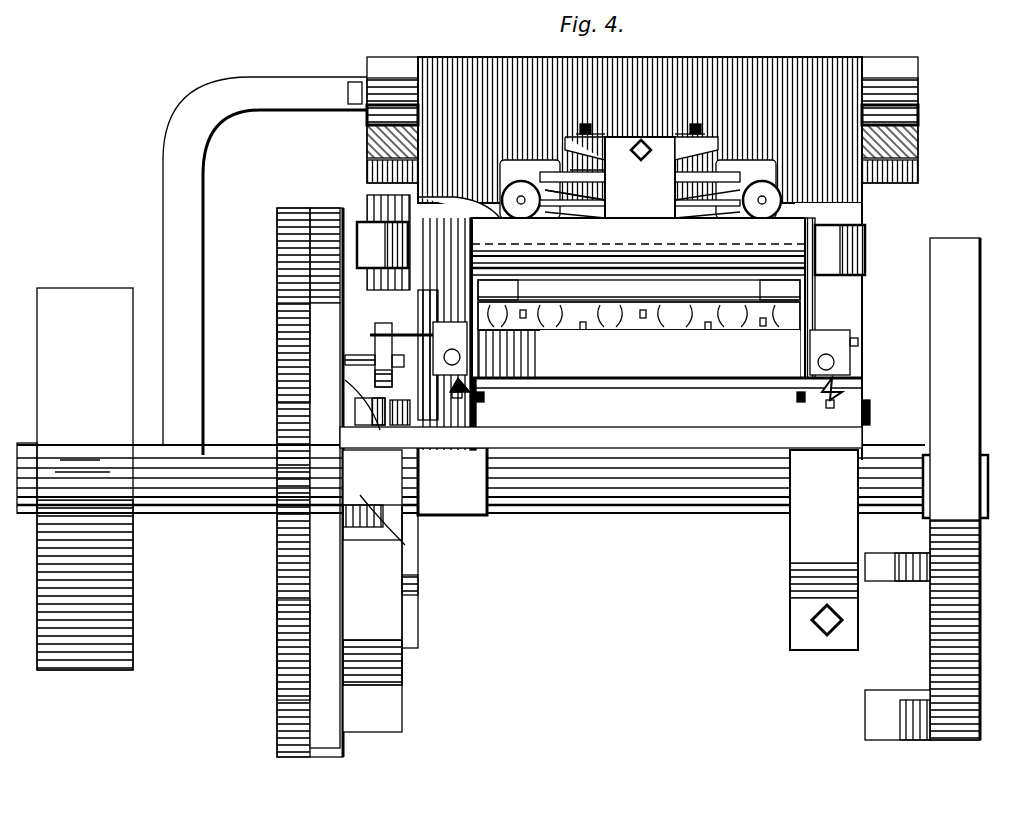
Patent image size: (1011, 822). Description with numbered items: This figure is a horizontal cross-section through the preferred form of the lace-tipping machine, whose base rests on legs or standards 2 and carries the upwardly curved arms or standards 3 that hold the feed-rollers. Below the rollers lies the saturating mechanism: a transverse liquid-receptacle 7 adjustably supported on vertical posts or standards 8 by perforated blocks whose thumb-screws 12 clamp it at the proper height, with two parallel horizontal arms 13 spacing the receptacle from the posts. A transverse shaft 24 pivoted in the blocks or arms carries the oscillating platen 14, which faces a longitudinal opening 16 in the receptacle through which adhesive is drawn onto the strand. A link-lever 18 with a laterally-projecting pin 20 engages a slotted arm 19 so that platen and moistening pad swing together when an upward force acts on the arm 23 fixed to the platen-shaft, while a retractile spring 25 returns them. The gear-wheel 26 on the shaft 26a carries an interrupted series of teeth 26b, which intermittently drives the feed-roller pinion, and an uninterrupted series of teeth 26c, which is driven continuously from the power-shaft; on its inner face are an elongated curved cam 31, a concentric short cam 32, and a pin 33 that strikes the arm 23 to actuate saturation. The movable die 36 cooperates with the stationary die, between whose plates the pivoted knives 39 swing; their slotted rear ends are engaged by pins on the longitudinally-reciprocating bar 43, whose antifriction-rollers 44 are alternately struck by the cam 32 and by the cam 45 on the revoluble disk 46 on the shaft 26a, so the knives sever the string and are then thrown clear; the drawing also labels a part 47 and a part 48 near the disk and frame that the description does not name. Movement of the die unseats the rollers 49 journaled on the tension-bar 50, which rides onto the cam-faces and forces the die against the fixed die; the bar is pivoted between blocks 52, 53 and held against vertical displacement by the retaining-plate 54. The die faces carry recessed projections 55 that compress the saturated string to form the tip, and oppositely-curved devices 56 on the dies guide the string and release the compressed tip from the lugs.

The legs or standards 2 is at (418, 592).
The arms or standards 3 is at (367, 132).
The liquid-receptacle 7 is at (768, 62).
The vertical posts or standards 8 is at (641, 348).
The thumb-screws 12 is at (644, 407).
The horizontal arms 13 is at (878, 350).
The oscillating platen 14 is at (639, 354).
The longitudinal opening 16 is at (639, 289).
The link-lever 18 is at (820, 308).
The slotted arm 19 is at (472, 232).
The laterally-projecting pin 20 is at (638, 295).
The arm 23 is at (378, 325).
The transverse shaft 24 is at (390, 323).
The retractile spring 25 is at (484, 398).
The gear-wheel 26 is at (277, 238).
The shaft 26a is at (471, 479).
The interrupted series of teeth 26b is at (277, 643).
The uninterrupted series of teeth 26c is at (277, 325).
The elongated curved cam 31 is at (402, 668).
The short cam 32 is at (402, 530).
The pin 33 is at (360, 348).
The movable die 36 is at (447, 328).
The swinging or pivoted knives 39 is at (583, 330).
The longitudinally-reciprocating bar 43 is at (355, 405).
The antifriction-rollers 44 is at (355, 412).
The cam 45 is at (865, 570).
The revoluble disk 46 is at (960, 256).
The lower bracket 47 is at (865, 703).
The block 48 is at (410, 250).
The rollers 49 is at (506, 205).
The tension-bar 50 is at (603, 170).
The block 52 is at (610, 150).
The block 53 is at (605, 205).
The retaining-plate 54 is at (585, 124).
The projections 55 is at (528, 328).
The oppositely-curved devices 56 is at (639, 289).